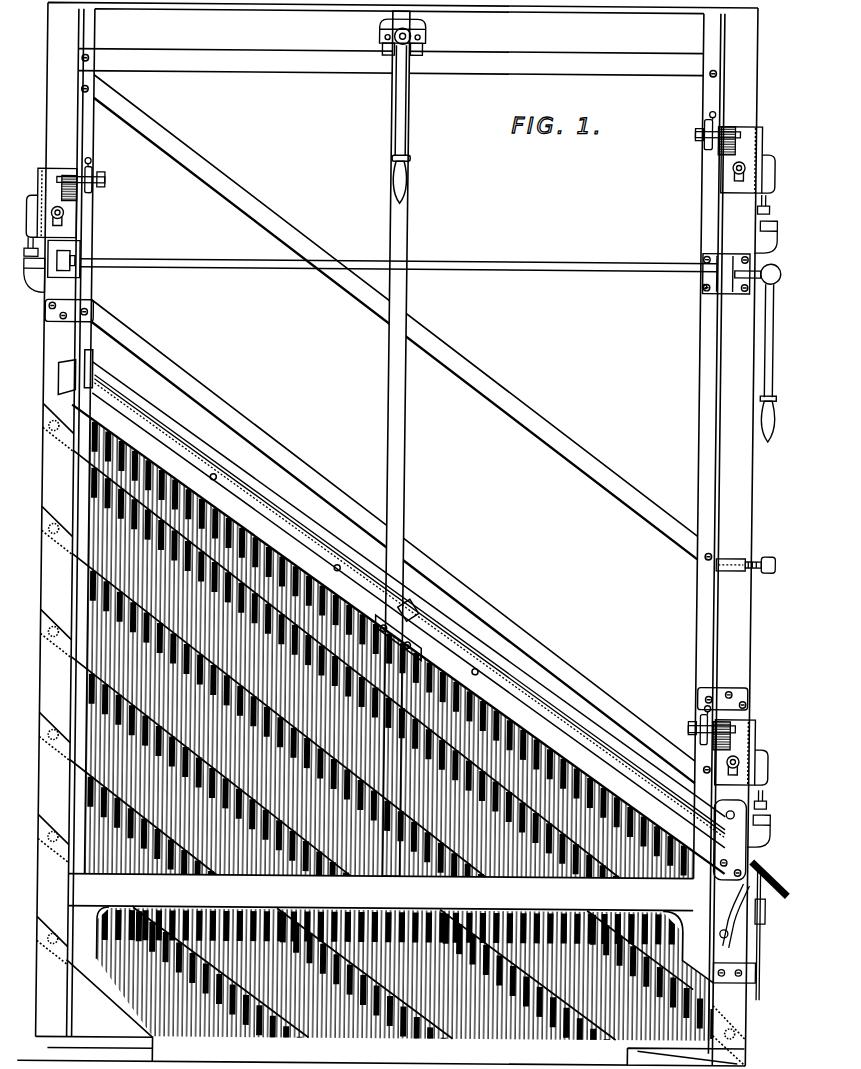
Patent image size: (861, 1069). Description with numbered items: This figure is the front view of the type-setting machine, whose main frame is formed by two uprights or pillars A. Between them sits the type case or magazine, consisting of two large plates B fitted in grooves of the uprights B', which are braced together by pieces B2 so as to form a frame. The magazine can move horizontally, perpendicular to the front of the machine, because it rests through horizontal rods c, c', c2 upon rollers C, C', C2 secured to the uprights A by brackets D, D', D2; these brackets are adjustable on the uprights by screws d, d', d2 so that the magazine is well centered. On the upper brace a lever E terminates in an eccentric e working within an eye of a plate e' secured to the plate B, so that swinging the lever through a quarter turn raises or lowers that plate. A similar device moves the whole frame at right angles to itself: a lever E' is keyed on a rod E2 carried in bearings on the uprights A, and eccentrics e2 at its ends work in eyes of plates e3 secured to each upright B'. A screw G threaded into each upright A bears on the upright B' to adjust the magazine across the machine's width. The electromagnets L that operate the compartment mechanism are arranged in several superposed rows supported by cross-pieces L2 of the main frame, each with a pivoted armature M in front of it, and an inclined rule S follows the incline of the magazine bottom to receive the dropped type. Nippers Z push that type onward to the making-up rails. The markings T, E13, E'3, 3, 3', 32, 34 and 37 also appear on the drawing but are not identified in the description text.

The upright A is at (387, 534).
The plate B is at (385, 525).
The upright of the magazine frame B' is at (702, 534).
The brace piece B2 is at (394, 416).
The roller C is at (76, 189).
The roller C' is at (718, 144).
The roller C2 is at (713, 738).
The horizontal rod c is at (81, 166).
The horizontal rod c' is at (718, 122).
The horizontal rod c2 is at (706, 721).
The bracket D is at (51, 202).
The bracket D' is at (748, 157).
The bracket D2 is at (733, 737).
The screw d is at (25, 264).
The screw d' is at (774, 220).
The screw d2 is at (776, 800).
The lever E is at (392, 124).
The lever E' is at (766, 353).
The rod E2 is at (398, 256).
The bracket plate E13 is at (69, 302).
The rod bracket E'3 is at (730, 282).
The eccentric e is at (550, 157).
The plate e' is at (389, 31).
The eccentric e2 is at (83, 270).
The plate e3 is at (83, 247).
The screw G is at (745, 554).
The electromagnet L is at (108, 934).
The cross-piece L2 is at (347, 664).
The armature M is at (415, 671).
The inclined rod or rule S is at (409, 606).
The inclined rail T is at (392, 612).
The nippers Z is at (750, 848).
The rod 3 is at (768, 935).
The lever 3' is at (736, 915).
The pivot 32 is at (727, 942).
The bracket 34 is at (770, 968).
The guide 37 is at (770, 912).